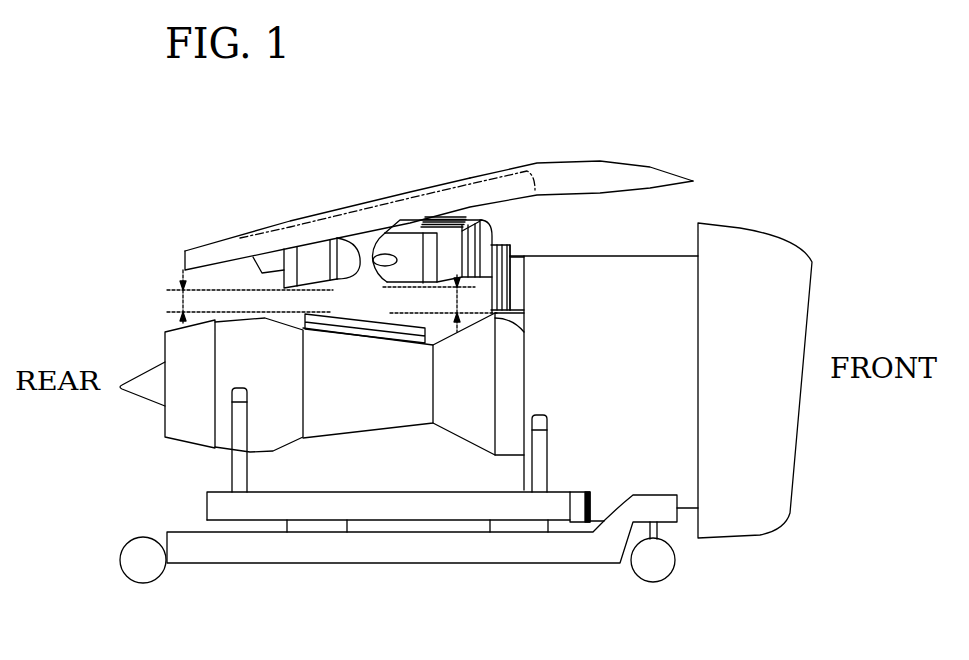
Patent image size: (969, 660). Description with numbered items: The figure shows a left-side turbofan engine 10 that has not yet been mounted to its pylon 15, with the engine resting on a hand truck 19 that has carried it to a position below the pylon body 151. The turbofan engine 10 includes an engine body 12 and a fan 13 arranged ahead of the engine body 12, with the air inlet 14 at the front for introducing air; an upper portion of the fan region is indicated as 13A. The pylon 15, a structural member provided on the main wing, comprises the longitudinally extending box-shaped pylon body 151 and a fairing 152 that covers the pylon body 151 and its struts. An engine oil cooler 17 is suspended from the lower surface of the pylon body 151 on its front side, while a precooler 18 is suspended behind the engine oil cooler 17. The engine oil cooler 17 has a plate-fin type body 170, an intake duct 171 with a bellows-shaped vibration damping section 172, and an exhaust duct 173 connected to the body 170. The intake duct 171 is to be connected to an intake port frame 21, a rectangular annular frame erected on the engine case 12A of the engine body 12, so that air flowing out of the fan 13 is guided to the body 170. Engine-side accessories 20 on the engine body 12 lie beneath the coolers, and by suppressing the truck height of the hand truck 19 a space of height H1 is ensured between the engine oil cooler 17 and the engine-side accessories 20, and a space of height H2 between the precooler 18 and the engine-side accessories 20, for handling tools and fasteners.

The turbofan engine 10 is at (785, 170).
The engine body 12 is at (382, 430).
The engine case 12A is at (320, 440).
The fan 13 is at (647, 256).
The fuselage upper surface 13A is at (577, 256).
The air inlet 14 is at (800, 248).
The pylon 15 is at (609, 157).
The pylon body 151 is at (508, 172).
The fairing 152 is at (560, 163).
The engine oil cooler 17 is at (398, 232).
The plate-fin type body 170 is at (422, 218).
The intake duct 171 is at (428, 222).
The vibration damping section 172 is at (496, 238).
The exhaust duct 173 is at (356, 262).
The precooler 18 is at (313, 252).
The hand truck 19 is at (525, 565).
The engine-side accessories 20 is at (318, 332).
The intake port frame 21 is at (503, 316).
The height H1 is at (440, 303).
The height H2 is at (236, 297).